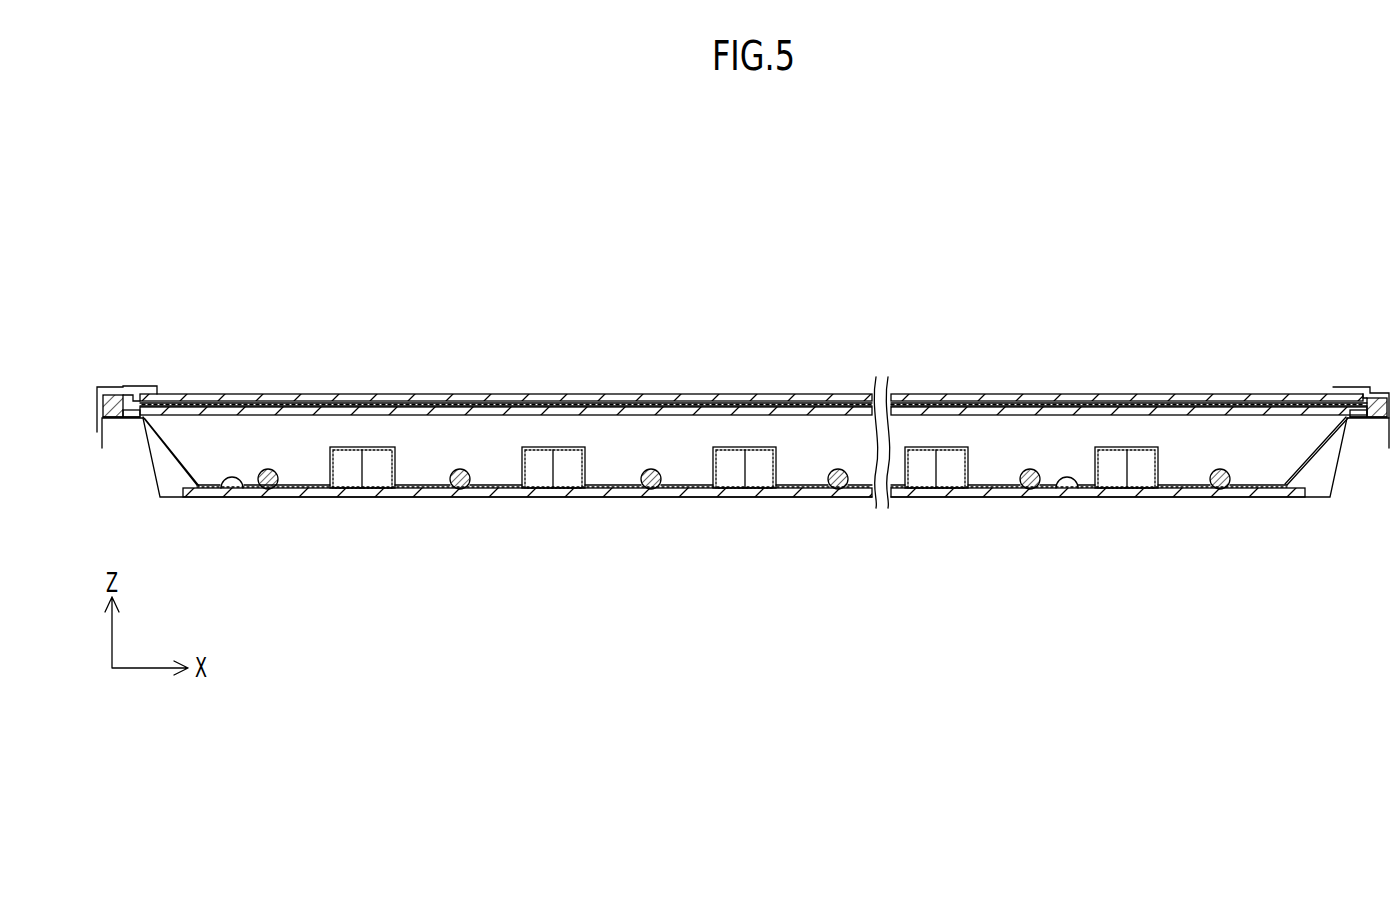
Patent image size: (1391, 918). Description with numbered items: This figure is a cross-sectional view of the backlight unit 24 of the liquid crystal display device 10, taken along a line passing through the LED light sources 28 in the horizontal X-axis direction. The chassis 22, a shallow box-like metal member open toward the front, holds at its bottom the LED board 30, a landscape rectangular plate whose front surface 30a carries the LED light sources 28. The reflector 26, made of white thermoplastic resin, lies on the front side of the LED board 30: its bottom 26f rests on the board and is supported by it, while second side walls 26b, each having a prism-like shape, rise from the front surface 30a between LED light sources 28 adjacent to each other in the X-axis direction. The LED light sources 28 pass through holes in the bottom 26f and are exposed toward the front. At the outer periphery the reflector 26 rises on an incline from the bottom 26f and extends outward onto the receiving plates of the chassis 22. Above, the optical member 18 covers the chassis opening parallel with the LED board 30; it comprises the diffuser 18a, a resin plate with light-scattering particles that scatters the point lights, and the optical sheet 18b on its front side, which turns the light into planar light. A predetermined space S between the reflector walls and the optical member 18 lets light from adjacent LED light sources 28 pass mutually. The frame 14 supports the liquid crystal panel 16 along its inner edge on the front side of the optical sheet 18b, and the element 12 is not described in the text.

The liquid crystal display device 10 is at (725, 268).
The frame 12 is at (140, 389).
The frame 14 is at (112, 408).
The liquid crystal panel 16 is at (690, 396).
The optical member 18 is at (753, 347).
The diffuser 18a is at (1068, 404).
The optical sheet 18b is at (1048, 332).
The chassis 22 is at (166, 498).
The backlight unit 24 is at (674, 543).
The reflector 26 is at (745, 459).
The second side wall 26b is at (348, 454).
The bottom 26f is at (1073, 493).
The LED light source 28 is at (268, 476).
The LED board 30 is at (351, 526).
The front surface of LED board 30a is at (230, 489).
The space S is at (963, 437).